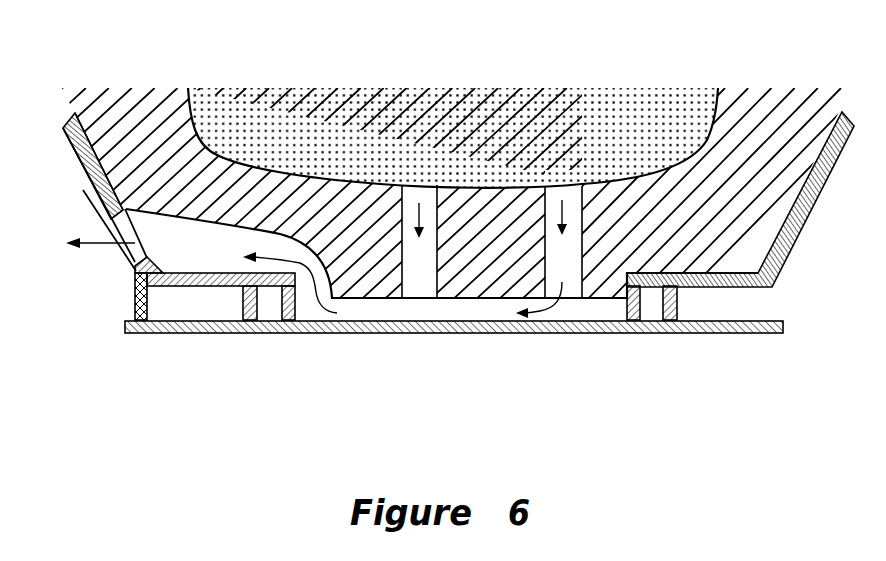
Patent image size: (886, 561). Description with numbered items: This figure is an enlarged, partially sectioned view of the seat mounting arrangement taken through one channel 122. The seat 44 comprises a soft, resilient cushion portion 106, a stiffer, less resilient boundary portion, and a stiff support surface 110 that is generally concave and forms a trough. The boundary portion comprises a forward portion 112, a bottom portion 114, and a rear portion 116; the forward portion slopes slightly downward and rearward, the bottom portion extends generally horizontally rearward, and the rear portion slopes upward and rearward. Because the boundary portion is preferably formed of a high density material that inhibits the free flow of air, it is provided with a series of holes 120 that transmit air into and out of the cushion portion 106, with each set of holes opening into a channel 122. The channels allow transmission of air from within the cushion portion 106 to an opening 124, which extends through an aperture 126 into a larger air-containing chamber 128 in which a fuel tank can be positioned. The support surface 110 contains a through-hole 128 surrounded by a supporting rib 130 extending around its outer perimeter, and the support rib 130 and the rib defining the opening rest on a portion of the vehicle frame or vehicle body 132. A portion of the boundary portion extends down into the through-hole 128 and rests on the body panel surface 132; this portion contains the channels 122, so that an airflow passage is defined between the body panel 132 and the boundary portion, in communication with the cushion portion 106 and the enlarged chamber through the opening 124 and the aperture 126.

The seat 44 is at (800, 100).
The cushion portion 106 is at (556, 108).
The support surface 110 is at (355, 200).
The forward portion 112 is at (158, 115).
The bottom portion 114 is at (497, 203).
The rear portion 116 is at (740, 102).
The holes 120 is at (422, 195).
The channel 122 is at (475, 333).
The opening 124 is at (235, 235).
The aperture 126 is at (137, 252).
The through-hole 128 is at (4, 203).
The supporting rib 130 is at (243, 303).
The vehicle body 132 is at (296, 300).